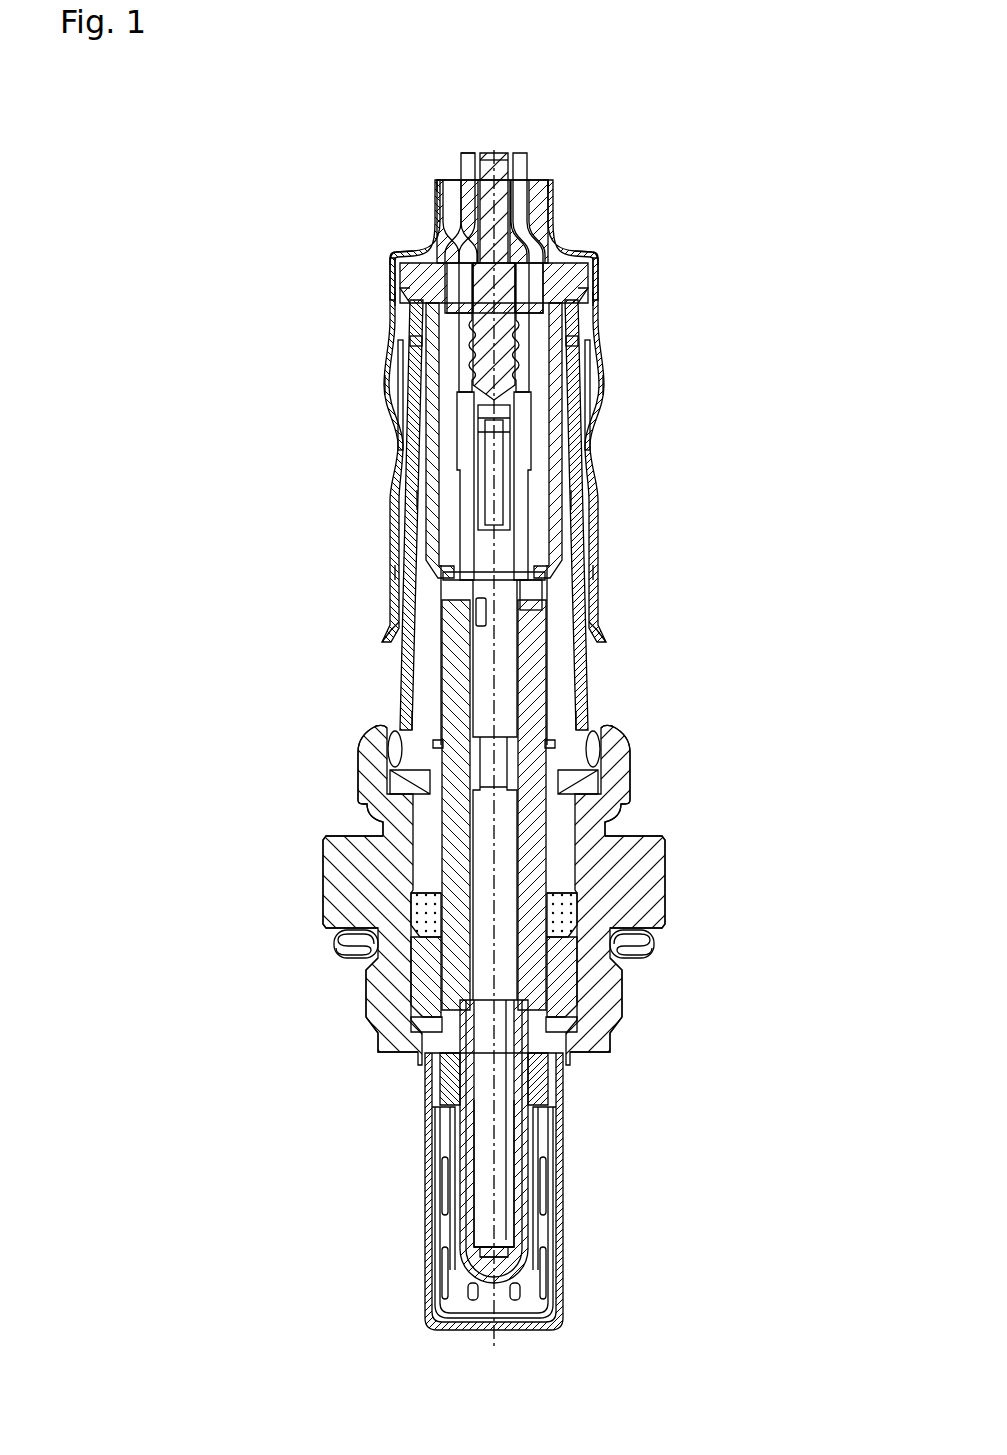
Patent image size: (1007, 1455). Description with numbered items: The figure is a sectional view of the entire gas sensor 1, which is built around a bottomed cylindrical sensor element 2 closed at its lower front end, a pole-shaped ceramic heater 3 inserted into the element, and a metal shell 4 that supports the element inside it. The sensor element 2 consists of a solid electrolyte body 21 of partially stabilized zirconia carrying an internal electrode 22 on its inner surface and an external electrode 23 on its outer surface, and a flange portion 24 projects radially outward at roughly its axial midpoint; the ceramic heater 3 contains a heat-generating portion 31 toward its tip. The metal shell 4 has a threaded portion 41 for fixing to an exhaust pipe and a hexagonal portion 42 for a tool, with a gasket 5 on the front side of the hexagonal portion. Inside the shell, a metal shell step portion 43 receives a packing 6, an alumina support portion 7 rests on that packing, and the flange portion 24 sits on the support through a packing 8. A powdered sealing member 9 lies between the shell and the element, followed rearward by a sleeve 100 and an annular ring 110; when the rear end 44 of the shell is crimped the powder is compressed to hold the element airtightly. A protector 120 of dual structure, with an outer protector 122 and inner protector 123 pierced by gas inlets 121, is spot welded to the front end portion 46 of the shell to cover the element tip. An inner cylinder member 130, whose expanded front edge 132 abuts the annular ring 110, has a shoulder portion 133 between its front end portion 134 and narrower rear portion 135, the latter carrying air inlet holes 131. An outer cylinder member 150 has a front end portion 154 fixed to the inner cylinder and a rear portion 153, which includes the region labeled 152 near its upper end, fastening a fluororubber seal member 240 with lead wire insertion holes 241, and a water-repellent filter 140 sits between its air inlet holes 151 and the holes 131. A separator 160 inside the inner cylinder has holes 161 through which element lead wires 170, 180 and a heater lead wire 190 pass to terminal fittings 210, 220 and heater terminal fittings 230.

The gas sensor 1 is at (654, 171).
The sensor element 2 is at (523, 1155).
The solid electrolyte body 21 is at (494, 1173).
The ceramic heater 3 is at (478, 1086).
The metal shell 4 is at (655, 875).
The hexagonal portion 42 is at (494, 882).
The gasket 5 is at (652, 938).
The packing 6 is at (383, 1043).
The alumina support portion 7 is at (427, 992).
The packing 8 is at (428, 946).
The powdered sealing member 9 is at (440, 870).
The internal electrode 22 is at (505, 1190).
The external electrode 23 is at (523, 1240).
The flange portion 24 is at (418, 922).
The heat-generating portion 31 is at (490, 1217).
The threaded portion 41 is at (618, 1000).
The metal shell step portion 43 is at (612, 1035).
The rear end of the metal shell 44 is at (610, 726).
The front end portion 46 is at (427, 1068).
The sleeve 100 is at (622, 823).
The annular ring 110 is at (632, 782).
The protector 120 is at (425, 1323).
The gas inlets 121 is at (443, 1293).
The outer protector 122 is at (442, 1163).
The inner protector 123 is at (438, 1205).
The inner cylinder member 130 is at (588, 673).
The air inlet holes 131 is at (585, 340).
The front edge 132 is at (405, 745).
The shoulder portion 133 is at (412, 493).
The front end portion 134 is at (600, 637).
The rear portion 135 is at (593, 300).
The water-repellent filter 140 is at (588, 407).
The outer cylinder member 150 is at (598, 497).
The air inlet holes 151 is at (601, 385).
The rear flange 152 is at (590, 242).
The rear portion 153 is at (560, 225).
The front end portion 154 is at (593, 572).
The separator 160 is at (420, 280).
The holes 161 is at (413, 305).
The element lead wire 170 is at (468, 187).
The element lead wire 180 is at (523, 173).
The heater lead wire 190 is at (500, 160).
The terminal fitting 210 is at (450, 462).
The terminal fitting 220 is at (537, 520).
The heater terminal fitting 230 is at (482, 432).
The seal member 240 is at (440, 242).
The lead wire insertion holes 241 is at (462, 200).